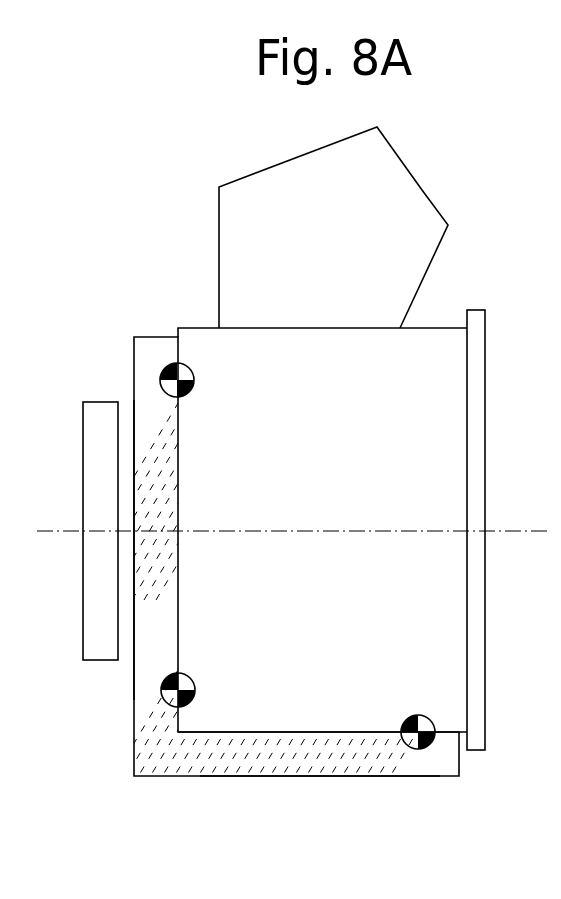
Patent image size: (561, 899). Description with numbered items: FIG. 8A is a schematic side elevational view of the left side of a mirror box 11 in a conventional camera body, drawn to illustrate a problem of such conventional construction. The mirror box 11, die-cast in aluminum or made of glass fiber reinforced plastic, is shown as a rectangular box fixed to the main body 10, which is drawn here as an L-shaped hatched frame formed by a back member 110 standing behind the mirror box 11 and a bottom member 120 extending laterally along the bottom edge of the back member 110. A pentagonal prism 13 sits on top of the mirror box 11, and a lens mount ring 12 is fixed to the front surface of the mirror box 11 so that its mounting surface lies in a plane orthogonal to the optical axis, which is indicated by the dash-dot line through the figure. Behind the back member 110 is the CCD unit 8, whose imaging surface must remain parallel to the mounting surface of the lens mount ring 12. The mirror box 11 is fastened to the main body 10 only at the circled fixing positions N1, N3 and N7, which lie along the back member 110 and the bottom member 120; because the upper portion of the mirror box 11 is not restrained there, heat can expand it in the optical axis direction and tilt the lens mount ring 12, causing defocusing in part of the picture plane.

The CCD unit 8 is at (85, 571).
The main body 10 is at (130, 358).
The mirror box 11 is at (278, 700).
The lens mount ring 12 is at (478, 497).
The pentagonal prism 13 is at (413, 212).
The back member 110 is at (136, 665).
The bottom member 120 is at (374, 757).
The contact point N1 is at (177, 363).
The contact point N3 is at (178, 707).
The contact point N7 is at (430, 745).